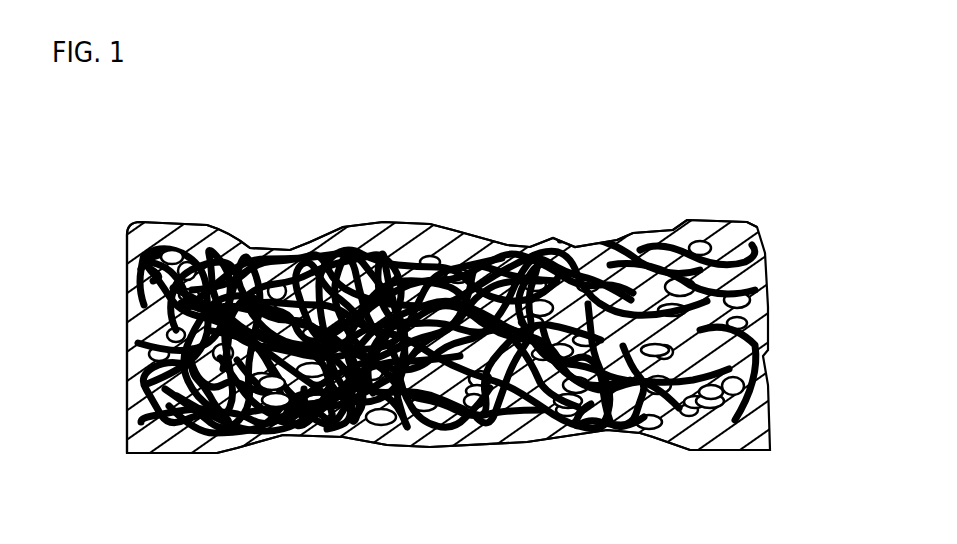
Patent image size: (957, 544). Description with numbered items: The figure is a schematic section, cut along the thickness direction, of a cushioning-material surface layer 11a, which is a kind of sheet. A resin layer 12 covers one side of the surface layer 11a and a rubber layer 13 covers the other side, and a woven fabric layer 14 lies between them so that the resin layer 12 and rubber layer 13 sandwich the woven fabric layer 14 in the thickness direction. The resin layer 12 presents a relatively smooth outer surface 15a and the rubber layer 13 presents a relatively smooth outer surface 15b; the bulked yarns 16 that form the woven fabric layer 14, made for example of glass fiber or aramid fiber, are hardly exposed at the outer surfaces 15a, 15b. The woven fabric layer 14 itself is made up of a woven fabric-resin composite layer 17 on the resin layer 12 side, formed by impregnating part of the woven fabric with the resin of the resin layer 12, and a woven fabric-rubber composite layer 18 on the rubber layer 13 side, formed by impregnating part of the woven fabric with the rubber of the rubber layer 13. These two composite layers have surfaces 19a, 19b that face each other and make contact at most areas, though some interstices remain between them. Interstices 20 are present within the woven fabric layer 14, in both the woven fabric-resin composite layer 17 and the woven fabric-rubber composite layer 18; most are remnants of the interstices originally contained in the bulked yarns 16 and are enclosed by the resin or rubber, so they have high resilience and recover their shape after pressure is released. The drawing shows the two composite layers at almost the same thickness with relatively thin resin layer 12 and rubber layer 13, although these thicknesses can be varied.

The cushioning-material surface layer 11a is at (726, 149).
The resin layer 12 is at (605, 250).
The rubber layer 13 is at (540, 422).
The woven fabric layer 14 is at (832, 278).
The outer surface 15a is at (201, 222).
The outer surface 15b is at (173, 454).
The bulked yarns 16 is at (642, 400).
The woven fabric-resin composite layer 17 is at (728, 300).
The woven fabric-rubber composite layer 18 is at (728, 398).
The surface 19a is at (128, 353).
The surface 19b is at (140, 338).
The interstices 20 is at (165, 258).